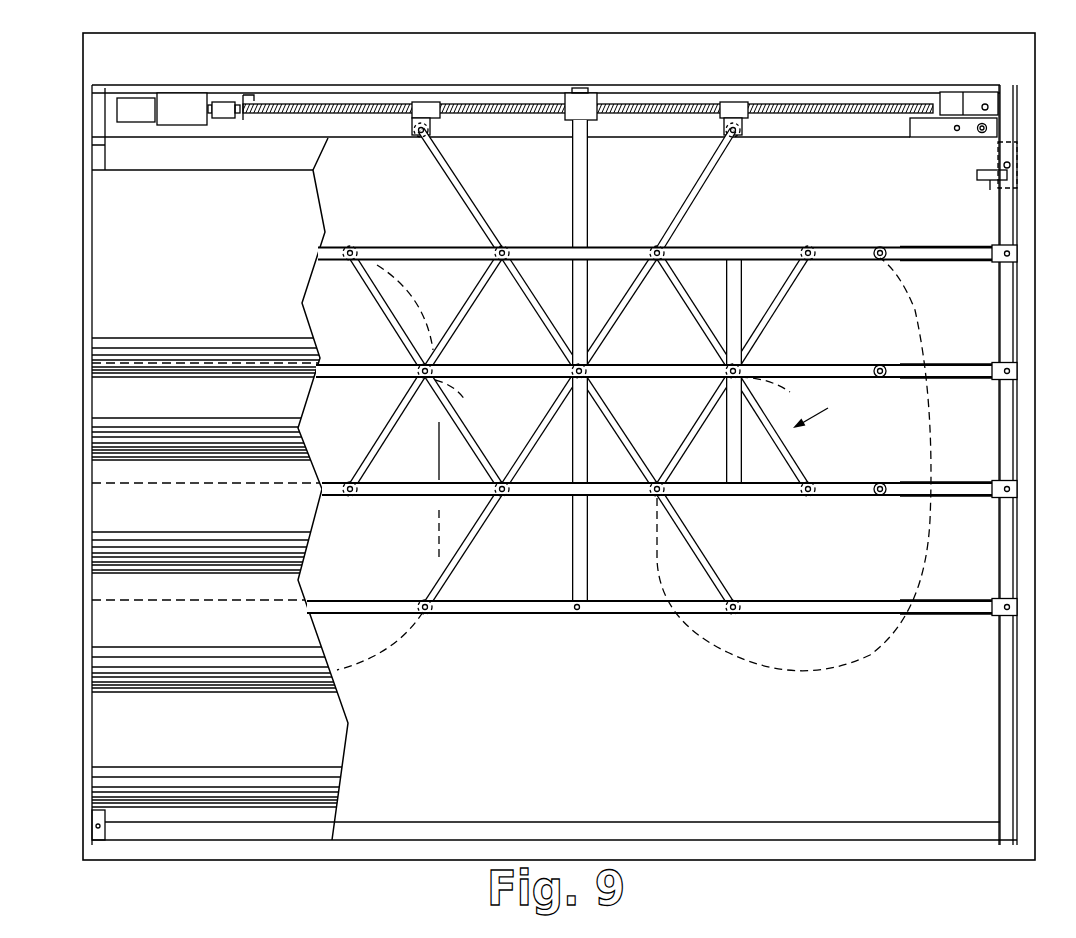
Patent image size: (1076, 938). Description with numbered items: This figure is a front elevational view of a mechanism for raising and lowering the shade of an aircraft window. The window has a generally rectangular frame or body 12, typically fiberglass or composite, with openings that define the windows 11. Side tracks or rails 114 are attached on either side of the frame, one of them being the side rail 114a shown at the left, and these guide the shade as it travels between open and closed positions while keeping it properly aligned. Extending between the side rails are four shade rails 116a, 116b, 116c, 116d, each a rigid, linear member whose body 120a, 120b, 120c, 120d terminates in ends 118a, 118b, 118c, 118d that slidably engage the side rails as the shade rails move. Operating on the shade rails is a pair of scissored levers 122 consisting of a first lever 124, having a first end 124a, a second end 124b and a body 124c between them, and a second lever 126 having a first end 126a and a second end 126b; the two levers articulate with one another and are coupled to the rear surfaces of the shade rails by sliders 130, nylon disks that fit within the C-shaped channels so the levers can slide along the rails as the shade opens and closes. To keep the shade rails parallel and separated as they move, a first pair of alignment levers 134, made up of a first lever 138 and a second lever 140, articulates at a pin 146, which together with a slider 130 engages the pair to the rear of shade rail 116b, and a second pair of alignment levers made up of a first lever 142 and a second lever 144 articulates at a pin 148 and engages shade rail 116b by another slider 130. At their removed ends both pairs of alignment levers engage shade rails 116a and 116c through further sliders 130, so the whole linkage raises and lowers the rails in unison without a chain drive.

The windows 11 is at (350, 449).
The frame or body 12 is at (977, 446).
The side tracks or rails 114 is at (1013, 788).
The side track or rail 114a is at (100, 843).
The shade rail 116a is at (937, 246).
The shade rail 116b is at (957, 364).
The shade rail 116c is at (975, 497).
The shade rail 116d is at (955, 615).
The end 118a is at (1013, 253).
The end 118b is at (1013, 372).
The end 118c is at (1013, 490).
The end 118d is at (1013, 607).
The body 120a is at (617, 248).
The body 120b is at (618, 363).
The body 120c is at (613, 497).
The body 120d is at (613, 615).
The pair of scissored levers 122 is at (703, 207).
The first lever 124 is at (621, 430).
The first end 124a is at (447, 164).
The second end 124b is at (718, 568).
The body 124c is at (525, 293).
The second lever 126 is at (540, 440).
The first end 126a is at (738, 152).
The second end 126b is at (462, 570).
The sliders 130 is at (446, 636).
The first pair of alignment levers 134 is at (831, 410).
The first lever 138 is at (790, 460).
The second lever 140 is at (695, 430).
The first lever 142 is at (463, 440).
The second lever 144 is at (398, 418).
The pin 146 is at (738, 368).
The pin 148 is at (433, 371).